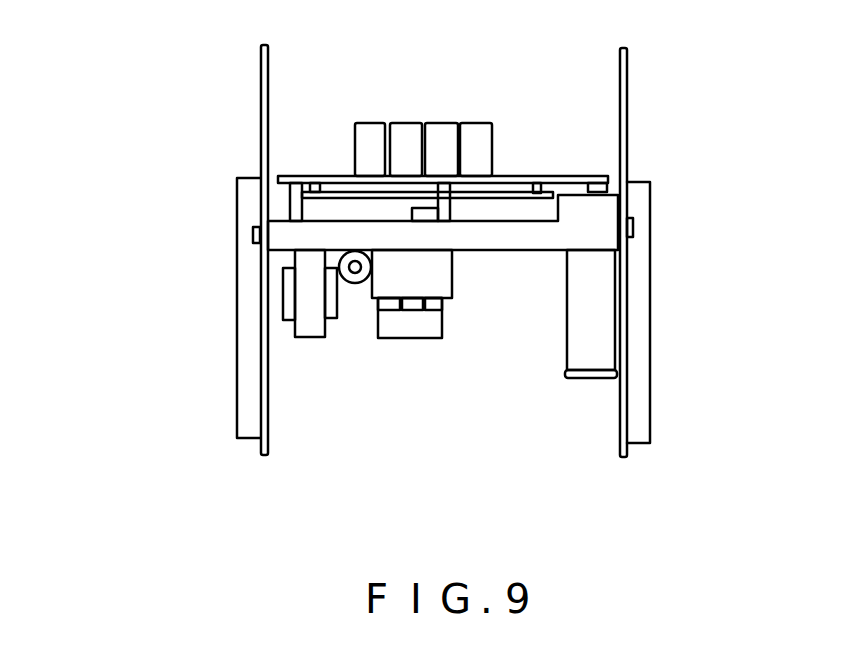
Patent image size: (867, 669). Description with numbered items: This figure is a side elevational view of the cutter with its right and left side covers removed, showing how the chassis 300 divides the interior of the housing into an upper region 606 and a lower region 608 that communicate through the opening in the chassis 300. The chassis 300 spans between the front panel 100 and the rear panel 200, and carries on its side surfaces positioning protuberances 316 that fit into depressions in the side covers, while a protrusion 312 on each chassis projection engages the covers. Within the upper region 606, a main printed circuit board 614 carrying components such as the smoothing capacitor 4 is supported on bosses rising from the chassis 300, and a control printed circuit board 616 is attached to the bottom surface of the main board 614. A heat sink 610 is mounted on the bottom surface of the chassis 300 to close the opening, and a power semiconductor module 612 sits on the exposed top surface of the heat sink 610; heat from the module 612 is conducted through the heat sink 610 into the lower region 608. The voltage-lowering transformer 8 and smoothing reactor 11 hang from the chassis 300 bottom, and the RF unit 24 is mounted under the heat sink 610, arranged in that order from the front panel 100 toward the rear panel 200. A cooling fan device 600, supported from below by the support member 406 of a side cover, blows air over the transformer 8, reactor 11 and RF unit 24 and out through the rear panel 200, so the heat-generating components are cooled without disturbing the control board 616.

The smoothing capacitor 4 is at (408, 130).
The voltage-lowering transformer 8 is at (309, 338).
The smoothing reactor 11 is at (353, 285).
The RF unit 24 is at (428, 340).
The front panel 100 is at (252, 112).
The rear panel 200 is at (637, 112).
The chassis 300 is at (603, 216).
The protrusion 312 is at (254, 237).
The positioning protuberance 316 is at (290, 208).
The support member 406 is at (600, 379).
The cooling fan device 600 is at (566, 378).
The upper region 606 is at (590, 43).
The lower region 608 is at (508, 509).
The heat sink 610 is at (505, 299).
The power semiconductor module 612 is at (452, 213).
The main printed circuit board 614 is at (567, 176).
The control printed circuit board 616 is at (505, 193).